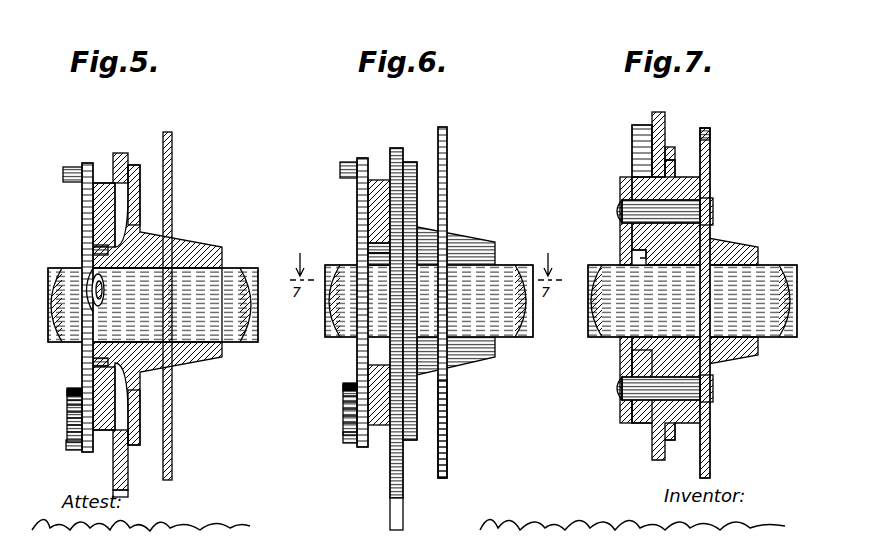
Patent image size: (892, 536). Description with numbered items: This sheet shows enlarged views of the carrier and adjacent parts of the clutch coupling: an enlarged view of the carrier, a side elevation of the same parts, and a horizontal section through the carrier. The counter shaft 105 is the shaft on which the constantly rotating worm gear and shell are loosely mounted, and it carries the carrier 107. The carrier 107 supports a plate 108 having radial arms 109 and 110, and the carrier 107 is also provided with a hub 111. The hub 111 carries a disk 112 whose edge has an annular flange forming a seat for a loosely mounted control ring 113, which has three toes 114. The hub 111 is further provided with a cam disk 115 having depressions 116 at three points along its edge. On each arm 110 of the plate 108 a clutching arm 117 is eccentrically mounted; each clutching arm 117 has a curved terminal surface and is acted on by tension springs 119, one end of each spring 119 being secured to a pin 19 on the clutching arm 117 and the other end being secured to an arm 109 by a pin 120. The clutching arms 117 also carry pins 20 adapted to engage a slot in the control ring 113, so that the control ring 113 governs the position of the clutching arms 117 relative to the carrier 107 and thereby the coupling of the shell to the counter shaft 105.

In FIG. 5, the pins 19 is at (67, 393).
In FIG. 6, the pins 19 is at (343, 390).
In FIG. 7, the pins 20 is at (670, 148).
In FIG. 5, the counter shaft 105 is at (226, 334).
In FIG. 6, the counter shaft 105 is at (350, 325).
In FIG. 7, the counter shaft 105 is at (612, 318).
In FIG. 5, the carrier 107 is at (224, 256).
In FIG. 6, the carrier 107 is at (468, 240).
In FIG. 7, the carrier 107 is at (760, 252).
In FIG. 5, the plate 108 is at (84, 258).
In FIG. 6, the plate 108 is at (368, 231).
In FIG. 7, the plate 108 is at (620, 258).
In FIG. 5, the radial arms 109 is at (82, 193).
In FIG. 6, the radial arms 109 is at (363, 158).
In FIG. 5, the radial arms 110 is at (104, 292).
In FIG. 6, the radial arms 110 is at (368, 258).
In FIG. 7, the radial arms 110 is at (622, 188).
In FIG. 5, the hub 111 is at (182, 240).
In FIG. 6, the hub 111 is at (456, 301).
In FIG. 7, the hub 111 is at (728, 355).
In FIG. 5, the disk 112 is at (140, 175).
In FIG. 6, the disk 112 is at (414, 160).
In FIG. 7, the disk 112 is at (673, 165).
In FIG. 5, the control ring 113 is at (119, 153).
In FIG. 6, the control ring 113 is at (393, 445).
In FIG. 7, the control ring 113 is at (650, 158).
In FIG. 5, the toes 114 is at (128, 493).
In FIG. 6, the toes 114 is at (403, 514).
In FIG. 7, the toes 114 is at (657, 115).
In FIG. 5, the cam disk 115 is at (172, 164).
In FIG. 6, the cam disk 115 is at (447, 413).
In FIG. 7, the cam disk 115 is at (710, 156).
In FIG. 6, the depressions 116 is at (447, 143).
In FIG. 7, the depressions 116 is at (710, 133).
In FIG. 5, the clutching arm 117 is at (102, 183).
In FIG. 6, the clutching arm 117 is at (372, 201).
In FIG. 7, the clutching arm 117 is at (628, 130).
In FIG. 5, the tension springs 119 is at (67, 417).
In FIG. 6, the tension springs 119 is at (343, 411).
In FIG. 5, the pins 120 is at (66, 170).
In FIG. 6, the pins 120 is at (342, 165).